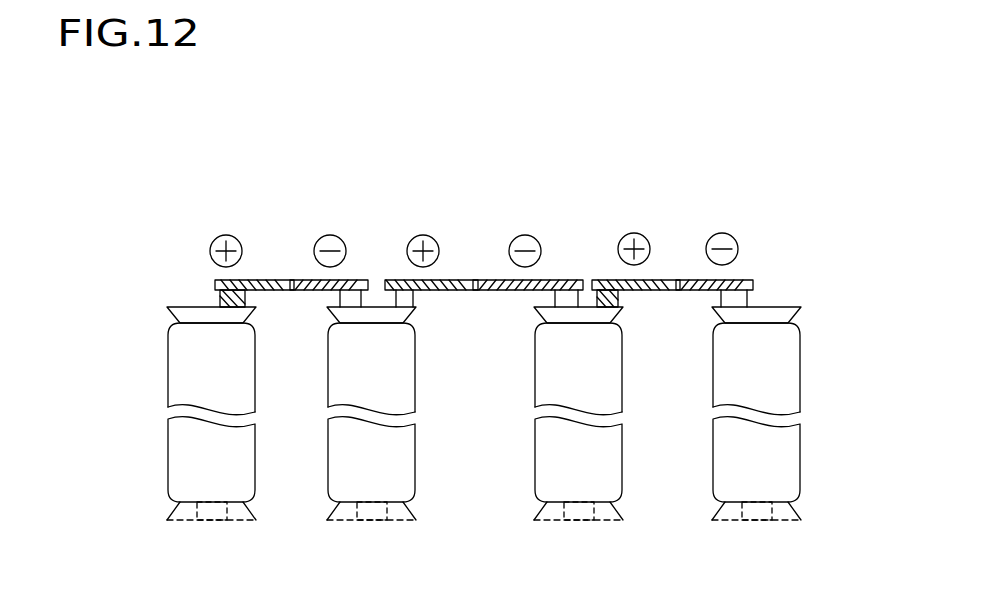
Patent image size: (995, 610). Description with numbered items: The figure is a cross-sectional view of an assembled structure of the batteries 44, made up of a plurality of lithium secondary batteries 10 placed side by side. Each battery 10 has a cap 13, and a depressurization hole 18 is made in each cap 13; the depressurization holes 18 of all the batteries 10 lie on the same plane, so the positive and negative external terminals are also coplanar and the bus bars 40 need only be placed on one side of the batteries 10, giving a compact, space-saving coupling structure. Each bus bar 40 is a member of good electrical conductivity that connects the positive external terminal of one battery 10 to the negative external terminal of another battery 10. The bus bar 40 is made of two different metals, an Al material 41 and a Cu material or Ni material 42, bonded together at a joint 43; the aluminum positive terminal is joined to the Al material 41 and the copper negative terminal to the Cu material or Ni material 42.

The battery 10 is at (168, 367).
The cap 13 is at (181, 315).
The depressurization hole 18 is at (210, 520).
The bus bar 40 is at (215, 283).
The Al material 41 is at (260, 280).
The Cu material or Ni material 42 is at (367, 279).
The joint 43 is at (297, 280).
The assembled structure of the batteries 44 is at (490, 187).